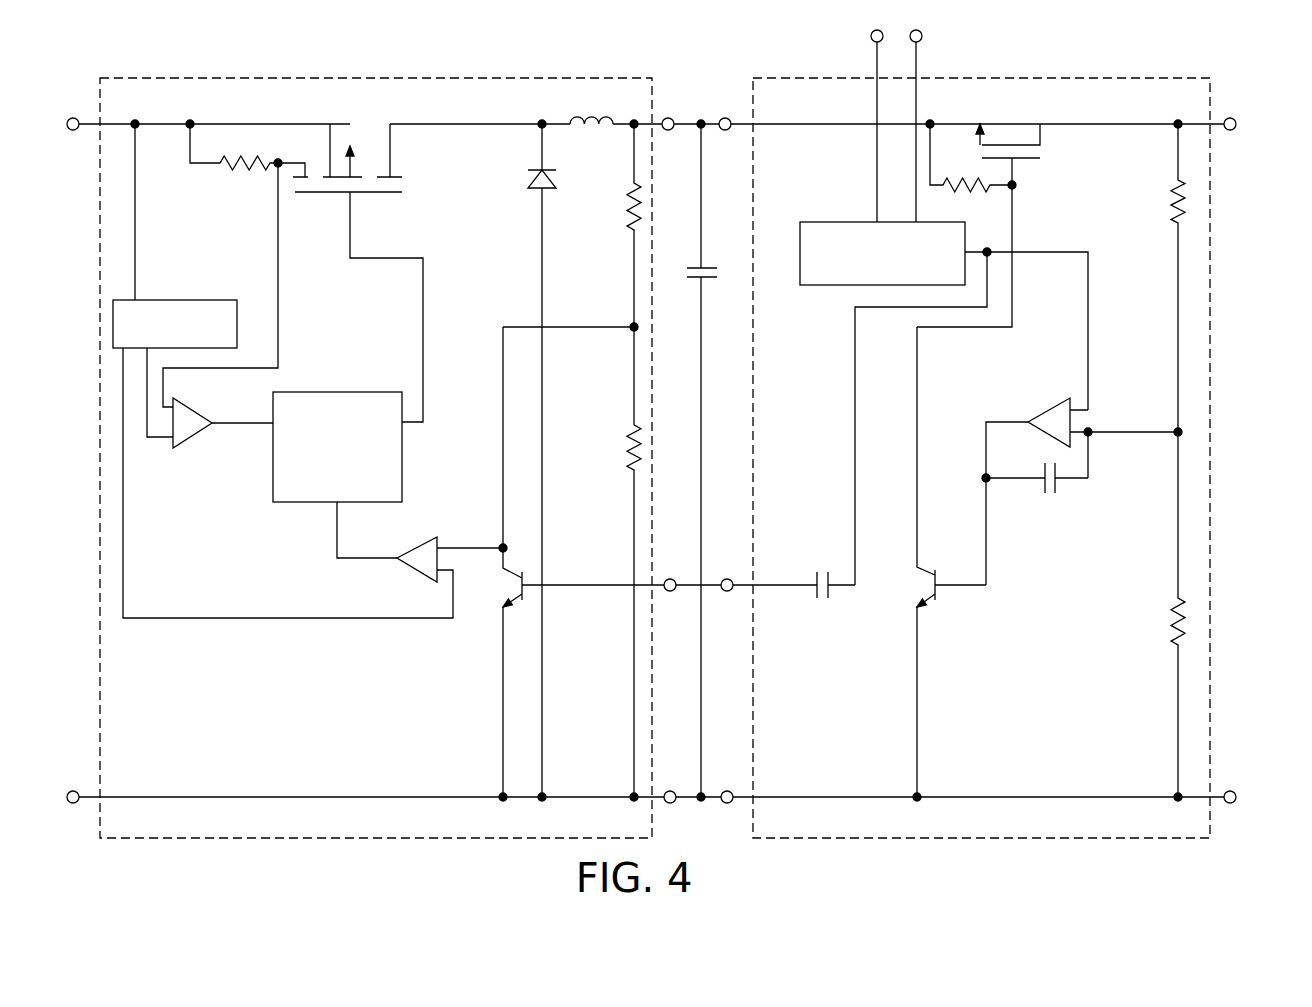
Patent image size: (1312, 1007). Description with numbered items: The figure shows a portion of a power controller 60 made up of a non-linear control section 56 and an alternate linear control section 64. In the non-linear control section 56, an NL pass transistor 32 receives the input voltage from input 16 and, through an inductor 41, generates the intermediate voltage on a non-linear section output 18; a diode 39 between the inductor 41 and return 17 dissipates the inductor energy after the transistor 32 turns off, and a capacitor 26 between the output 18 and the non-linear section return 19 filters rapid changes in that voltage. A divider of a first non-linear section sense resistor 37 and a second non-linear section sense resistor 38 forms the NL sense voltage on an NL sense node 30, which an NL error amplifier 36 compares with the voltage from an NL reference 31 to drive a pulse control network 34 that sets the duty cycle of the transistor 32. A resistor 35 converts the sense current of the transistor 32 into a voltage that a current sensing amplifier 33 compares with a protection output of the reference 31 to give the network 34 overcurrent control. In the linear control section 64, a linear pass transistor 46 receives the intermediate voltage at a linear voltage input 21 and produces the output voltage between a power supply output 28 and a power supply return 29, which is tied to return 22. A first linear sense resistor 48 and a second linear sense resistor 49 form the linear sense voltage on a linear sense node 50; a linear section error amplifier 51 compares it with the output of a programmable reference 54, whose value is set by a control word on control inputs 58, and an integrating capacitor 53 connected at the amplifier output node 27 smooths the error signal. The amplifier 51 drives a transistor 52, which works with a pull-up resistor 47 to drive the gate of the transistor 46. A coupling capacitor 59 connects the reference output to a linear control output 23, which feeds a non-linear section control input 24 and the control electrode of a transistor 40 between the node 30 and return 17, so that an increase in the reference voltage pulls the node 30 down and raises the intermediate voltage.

The input 16 is at (68, 131).
The return 17 is at (70, 791).
The non-linear section output 18 is at (667, 117).
The non-linear section return 19 is at (670, 804).
The linear voltage input 21 is at (725, 117).
The return 22 is at (727, 790).
The linear control output 23 is at (728, 578).
The non-linear section control input 24 is at (670, 592).
The capacitor 26 is at (687, 273).
The node 27 is at (982, 481).
The power supply output 28 is at (1236, 128).
The power supply return 29 is at (1237, 797).
The NL sense node 30 is at (506, 545).
The NL reference 31 is at (187, 300).
The NL pass transistor 32 is at (408, 185).
The current sensing amplifier 33 is at (193, 437).
The pulse control network 34 is at (315, 392).
The resistor 35 is at (230, 170).
The NL error amplifier 36 is at (427, 535).
The first non-linear section sense resistor 37 is at (633, 207).
The second non-linear section sense resistor 38 is at (633, 447).
The diode 39 is at (555, 190).
The transistor 40 is at (505, 590).
The inductor 41 is at (594, 130).
The linear pass transistor 46 is at (1035, 153).
The resistor 47 is at (965, 182).
The first linear sense resistor 48 is at (1175, 205).
The second linear sense resistor 49 is at (1170, 620).
The linear sense node 50 is at (1170, 430).
The linear section error amplifier 51 is at (1050, 405).
The transistor 52 is at (922, 590).
The integrating capacitor 53 is at (1045, 495).
The programmable reference 54 is at (810, 222).
The non-linear control section 56 is at (273, 838).
The control inputs 58 is at (883, 40).
The coupling capacitor 59 is at (822, 600).
The power controller 60 is at (1000, 892).
The linear control section 64 is at (877, 840).